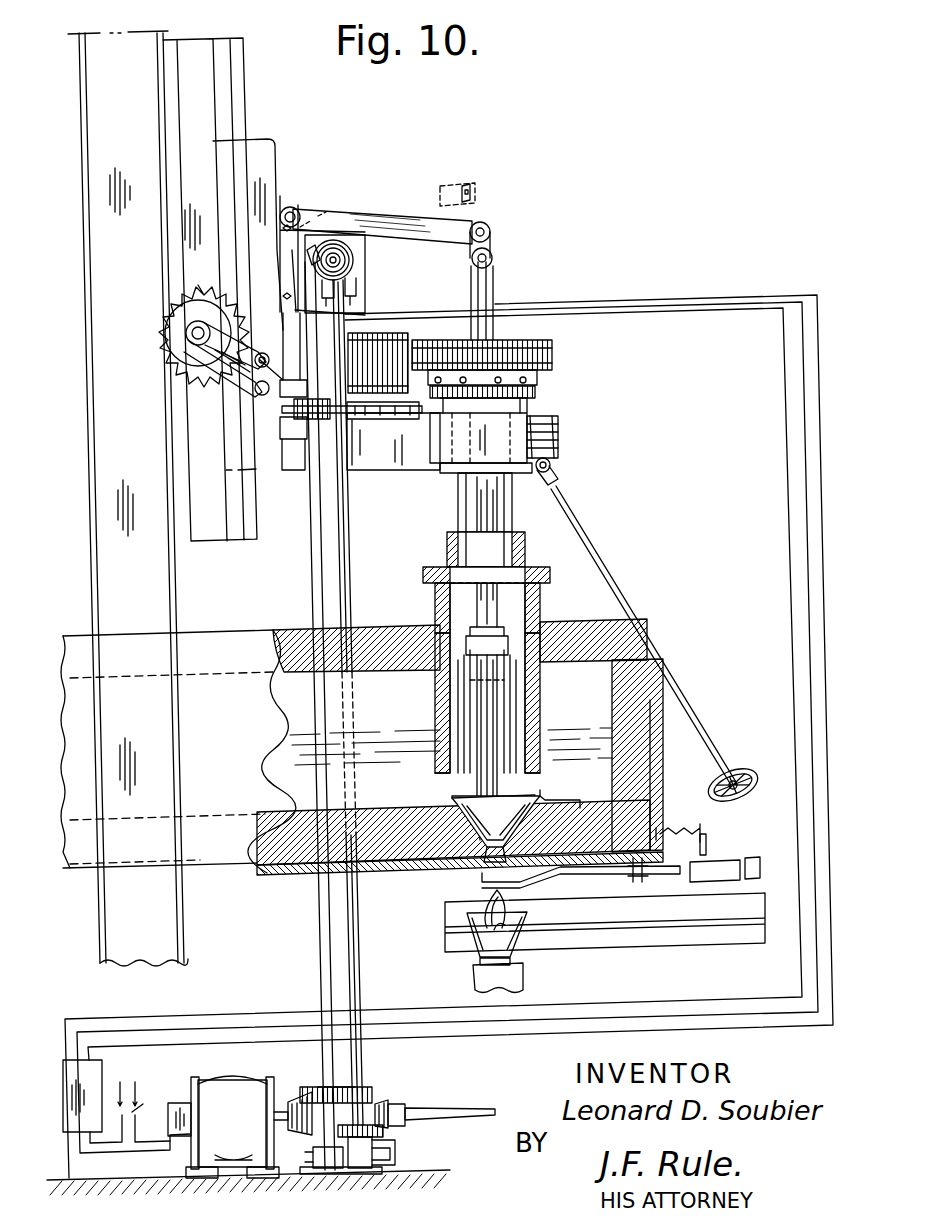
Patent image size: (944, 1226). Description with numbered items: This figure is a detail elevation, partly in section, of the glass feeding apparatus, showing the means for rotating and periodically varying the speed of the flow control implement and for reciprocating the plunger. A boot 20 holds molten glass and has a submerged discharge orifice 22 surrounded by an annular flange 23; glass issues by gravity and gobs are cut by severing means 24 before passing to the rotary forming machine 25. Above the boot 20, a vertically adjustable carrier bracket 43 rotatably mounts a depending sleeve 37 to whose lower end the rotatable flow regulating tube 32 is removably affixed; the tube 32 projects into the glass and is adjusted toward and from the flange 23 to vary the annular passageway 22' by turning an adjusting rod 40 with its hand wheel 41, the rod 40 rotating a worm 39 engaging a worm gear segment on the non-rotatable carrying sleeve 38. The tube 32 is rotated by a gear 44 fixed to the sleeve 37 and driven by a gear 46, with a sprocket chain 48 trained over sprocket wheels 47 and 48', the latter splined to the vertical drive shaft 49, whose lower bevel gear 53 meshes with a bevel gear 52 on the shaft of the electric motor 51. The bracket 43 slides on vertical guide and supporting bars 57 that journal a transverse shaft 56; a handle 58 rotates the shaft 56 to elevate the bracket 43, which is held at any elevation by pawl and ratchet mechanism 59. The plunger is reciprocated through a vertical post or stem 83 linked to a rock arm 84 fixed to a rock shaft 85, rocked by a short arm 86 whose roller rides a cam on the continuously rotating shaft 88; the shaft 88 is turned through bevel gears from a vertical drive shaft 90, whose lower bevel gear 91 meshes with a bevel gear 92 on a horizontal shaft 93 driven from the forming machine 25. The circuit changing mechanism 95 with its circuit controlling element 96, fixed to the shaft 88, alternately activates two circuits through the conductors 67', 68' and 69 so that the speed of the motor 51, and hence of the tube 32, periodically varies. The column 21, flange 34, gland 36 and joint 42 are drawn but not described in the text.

The boot 20 is at (222, 634).
The column 21 is at (102, 249).
The discharge orifice 22 is at (465, 827).
The annular passageway 22' is at (450, 747).
The annular flange 23 is at (540, 797).
The severing means 24 is at (578, 877).
The forming machine 25 is at (630, 942).
The flow regulating tube 32 is at (440, 680).
The cylinder flange 34 is at (423, 596).
The gland 36 is at (447, 552).
The sleeve 37 is at (458, 506).
The carrying sleeve 38 is at (537, 404).
The worm 39 is at (560, 436).
The adjusting rod 40 is at (596, 548).
The hand wheel 41 is at (741, 772).
The joint 42 is at (552, 461).
The carrier bracket 43 is at (380, 462).
The gear 44 is at (520, 346).
The gear 46 is at (410, 345).
The sprocket wheel 47 is at (418, 419).
The sprocket chain 48 is at (335, 420).
The sprocket wheel 48' is at (280, 425).
The drive shaft 49 is at (318, 547).
The electric motor 51 is at (250, 1070).
The bevel gear 52 is at (330, 1160).
The bevel gear 53 is at (304, 1090).
The transverse shaft 56 is at (193, 325).
The guide and supporting bars 57 is at (218, 103).
The handle 58 is at (186, 354).
The pawl and ratchet mechanism 59 is at (170, 333).
The conductor 67' is at (433, 743).
The conductor 68' is at (447, 727).
The conductor 69 is at (202, 1046).
The post or stem 83 is at (499, 514).
The rock arm 84 is at (366, 216).
The rock shaft 85 is at (291, 210).
The short arm 86 is at (324, 214).
The shaft 88 is at (340, 262).
The vertical drive shaft 90 is at (343, 513).
The bevel gear 91 is at (374, 1146).
The bevel gear 92 is at (380, 1102).
The horizontal shaft 93 is at (462, 1098).
The circuit changing mechanism 95 is at (345, 282).
The circuit controlling element 96 is at (353, 249).